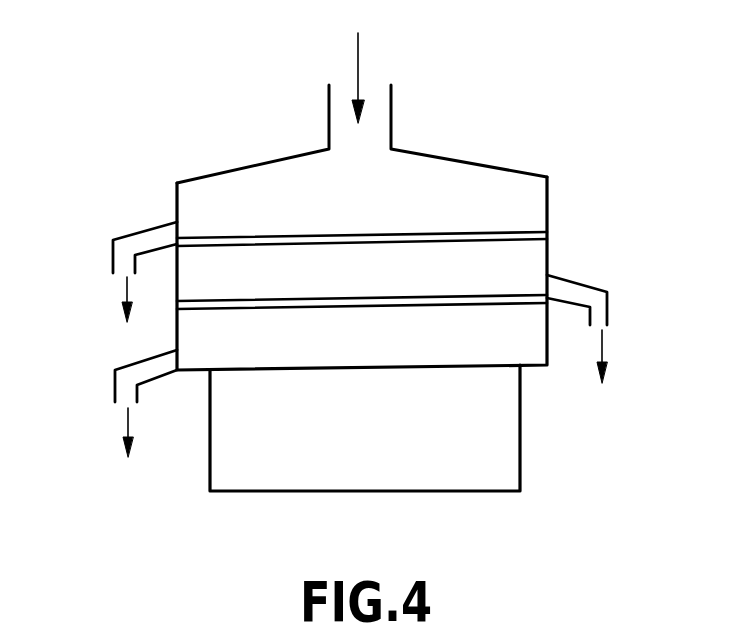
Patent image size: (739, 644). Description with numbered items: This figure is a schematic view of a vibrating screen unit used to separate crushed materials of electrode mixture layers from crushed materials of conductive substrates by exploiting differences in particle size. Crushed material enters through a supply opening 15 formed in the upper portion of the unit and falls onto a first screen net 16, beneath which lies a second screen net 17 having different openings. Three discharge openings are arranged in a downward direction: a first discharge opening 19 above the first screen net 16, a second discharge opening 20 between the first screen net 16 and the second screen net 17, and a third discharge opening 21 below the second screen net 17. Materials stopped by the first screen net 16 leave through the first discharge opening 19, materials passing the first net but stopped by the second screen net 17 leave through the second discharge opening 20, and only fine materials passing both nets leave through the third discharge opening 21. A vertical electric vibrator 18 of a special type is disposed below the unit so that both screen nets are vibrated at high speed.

The supply opening 15 is at (373, 122).
The first screen net 16 is at (493, 232).
The second screen net 17 is at (507, 298).
The vertical electric vibrator 18 is at (507, 449).
The first discharge opening 19 is at (120, 268).
The second discharge opening 20 is at (600, 325).
The third discharge opening 21 is at (120, 397).